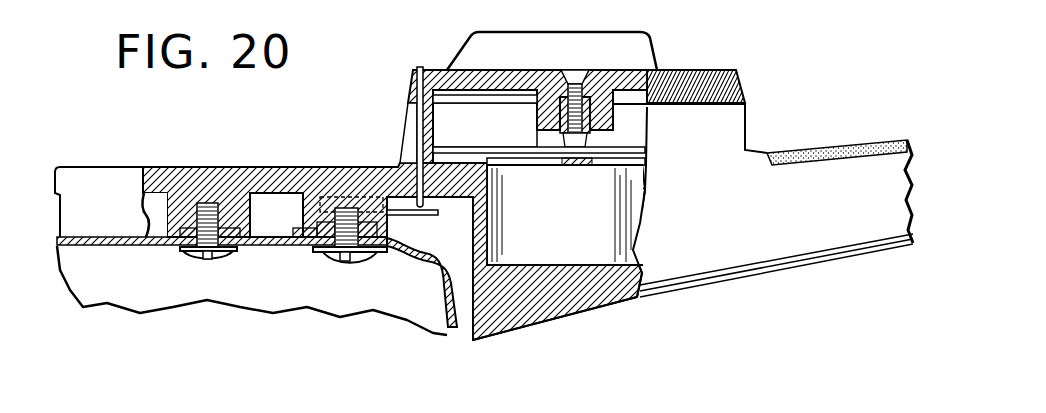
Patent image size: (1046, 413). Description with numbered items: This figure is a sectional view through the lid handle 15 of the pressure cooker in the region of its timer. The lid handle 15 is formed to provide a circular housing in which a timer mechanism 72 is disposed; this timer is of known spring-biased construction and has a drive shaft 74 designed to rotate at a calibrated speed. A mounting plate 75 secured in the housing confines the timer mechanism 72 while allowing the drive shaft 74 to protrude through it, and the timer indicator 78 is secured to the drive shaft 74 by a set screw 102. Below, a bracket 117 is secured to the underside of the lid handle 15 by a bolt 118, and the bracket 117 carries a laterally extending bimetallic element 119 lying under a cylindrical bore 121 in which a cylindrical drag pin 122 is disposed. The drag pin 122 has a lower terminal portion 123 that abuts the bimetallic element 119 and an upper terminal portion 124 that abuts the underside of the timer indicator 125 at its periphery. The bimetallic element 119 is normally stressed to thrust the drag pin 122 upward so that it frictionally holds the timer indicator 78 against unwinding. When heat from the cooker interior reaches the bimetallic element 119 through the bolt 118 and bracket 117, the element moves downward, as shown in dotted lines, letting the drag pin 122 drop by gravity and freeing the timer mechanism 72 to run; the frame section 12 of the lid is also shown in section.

The frame member 12 is at (100, 237).
The lid handle 15 is at (837, 150).
The timer mechanism 72 is at (603, 224).
The drive shaft 74 is at (570, 167).
The mounting plate 75 is at (630, 133).
The timer indicator 78 is at (712, 70).
The set screw 102 is at (577, 68).
The bracket 117 is at (302, 248).
The bolt 118 is at (333, 270).
The bimetallic element 119 is at (407, 254).
The cylindrical bore 121 is at (417, 122).
The drag pin 122 is at (420, 152).
The lower terminal portion 123 is at (423, 218).
The upper terminal portion 124 is at (423, 67).
The underside of the timer indicator 125 is at (433, 113).